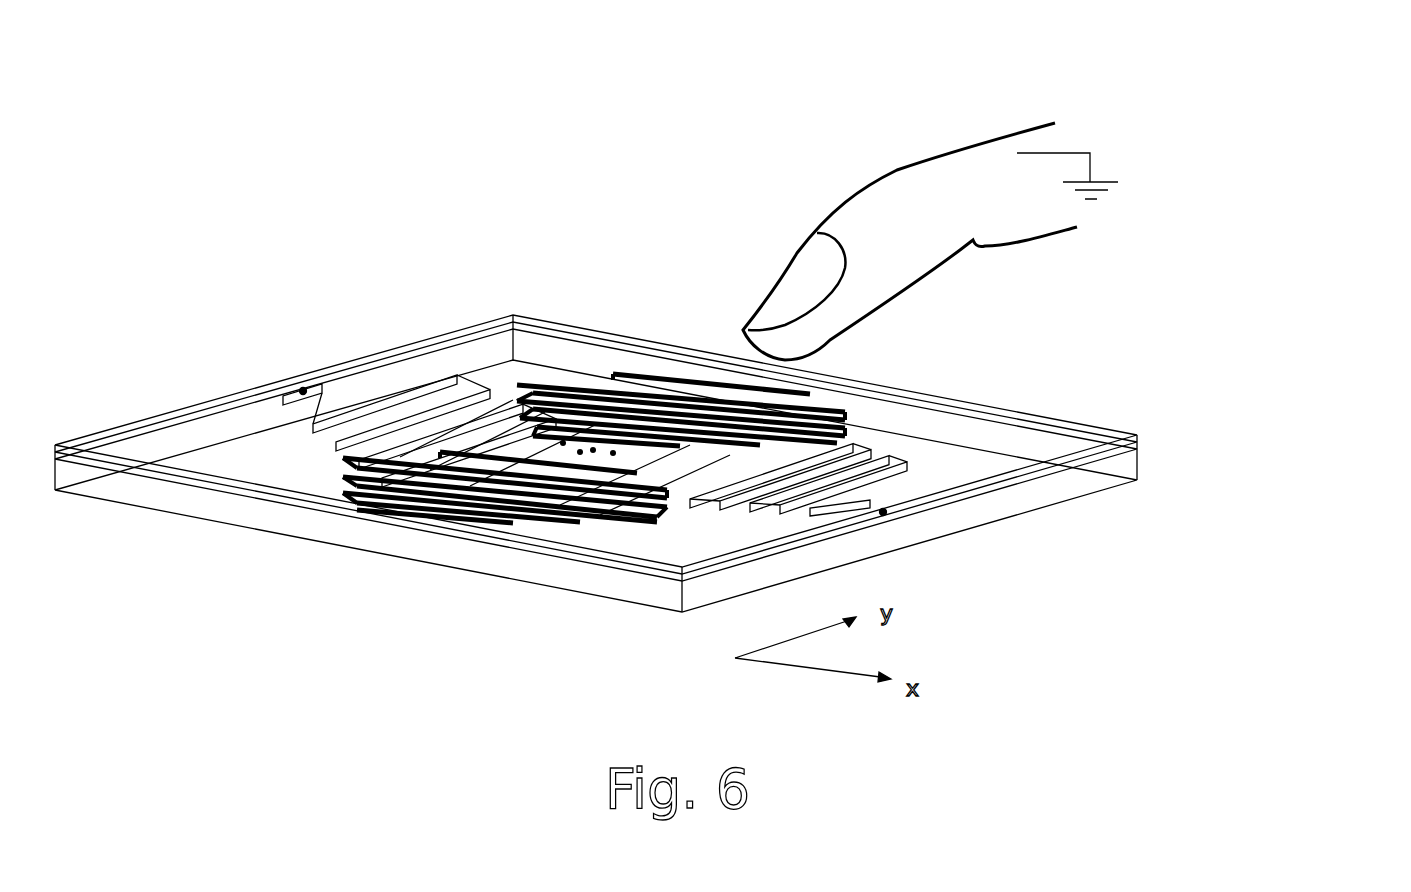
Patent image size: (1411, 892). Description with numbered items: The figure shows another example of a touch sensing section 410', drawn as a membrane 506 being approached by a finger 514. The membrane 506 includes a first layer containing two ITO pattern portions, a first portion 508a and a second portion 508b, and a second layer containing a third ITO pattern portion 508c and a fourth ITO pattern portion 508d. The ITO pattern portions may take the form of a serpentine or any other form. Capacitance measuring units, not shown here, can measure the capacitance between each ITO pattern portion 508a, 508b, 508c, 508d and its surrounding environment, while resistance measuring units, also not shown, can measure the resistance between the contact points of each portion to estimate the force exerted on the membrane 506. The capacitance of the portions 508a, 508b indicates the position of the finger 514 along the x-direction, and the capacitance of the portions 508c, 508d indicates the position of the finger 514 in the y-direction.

The touch sensing section 410' is at (361, 109).
The membrane 506 is at (722, 463).
The first portion of ITO pattern 508a is at (423, 395).
The second portion of ITO pattern 508b is at (855, 475).
The third ITO pattern portion 508c is at (669, 382).
The fourth ITO pattern portion 508d is at (540, 520).
The finger 514 is at (903, 168).